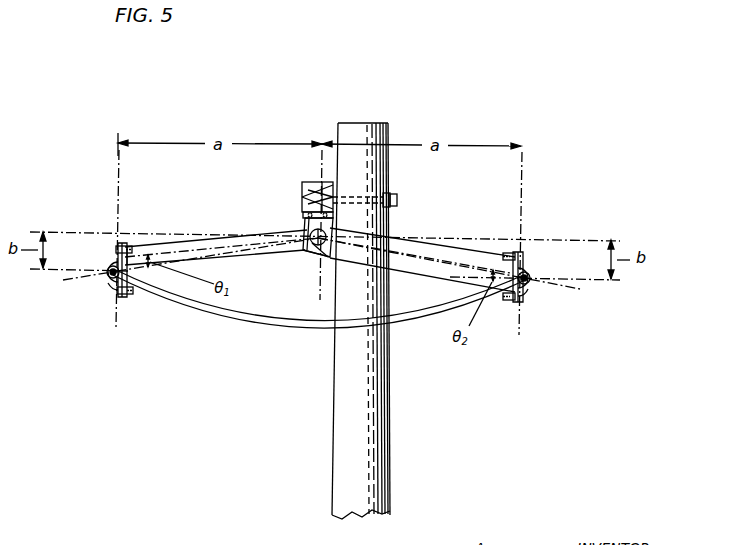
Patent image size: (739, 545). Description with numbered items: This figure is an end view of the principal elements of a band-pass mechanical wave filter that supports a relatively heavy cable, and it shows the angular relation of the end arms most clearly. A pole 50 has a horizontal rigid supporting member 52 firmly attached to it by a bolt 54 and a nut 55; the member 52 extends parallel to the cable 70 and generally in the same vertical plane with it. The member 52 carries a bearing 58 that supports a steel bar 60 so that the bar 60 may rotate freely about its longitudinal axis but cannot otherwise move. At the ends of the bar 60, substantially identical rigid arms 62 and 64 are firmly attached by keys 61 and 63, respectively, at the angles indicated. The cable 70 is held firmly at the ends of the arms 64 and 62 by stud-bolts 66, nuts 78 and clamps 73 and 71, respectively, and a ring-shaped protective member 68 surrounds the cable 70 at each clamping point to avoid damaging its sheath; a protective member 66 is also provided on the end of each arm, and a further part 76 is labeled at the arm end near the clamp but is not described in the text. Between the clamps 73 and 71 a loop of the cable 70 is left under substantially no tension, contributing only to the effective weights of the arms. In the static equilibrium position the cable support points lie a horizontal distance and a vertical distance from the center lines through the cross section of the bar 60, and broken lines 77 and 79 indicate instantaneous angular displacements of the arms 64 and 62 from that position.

The pole 50 is at (338, 424).
The horizontal rigid supporting member 52 is at (333, 192).
The bolt 54 is at (302, 200).
The nut 55 is at (397, 205).
The bearing 58 is at (306, 218).
The steel bar 60 is at (323, 258).
The key 61 is at (327, 236).
The rigid arm 62 is at (408, 235).
The key 63 is at (310, 254).
The rigid arm 64 is at (243, 233).
The stud-bolt 66 is at (119, 242).
The ring-shaped protective member 68 is at (106, 270).
The cable 70 is at (245, 323).
The clamp 71 is at (529, 289).
The clamp 73 is at (108, 284).
The arm end 76 is at (128, 244).
The broken line 77 is at (175, 248).
The nut 78 is at (116, 249).
The broken line 79 is at (420, 268).